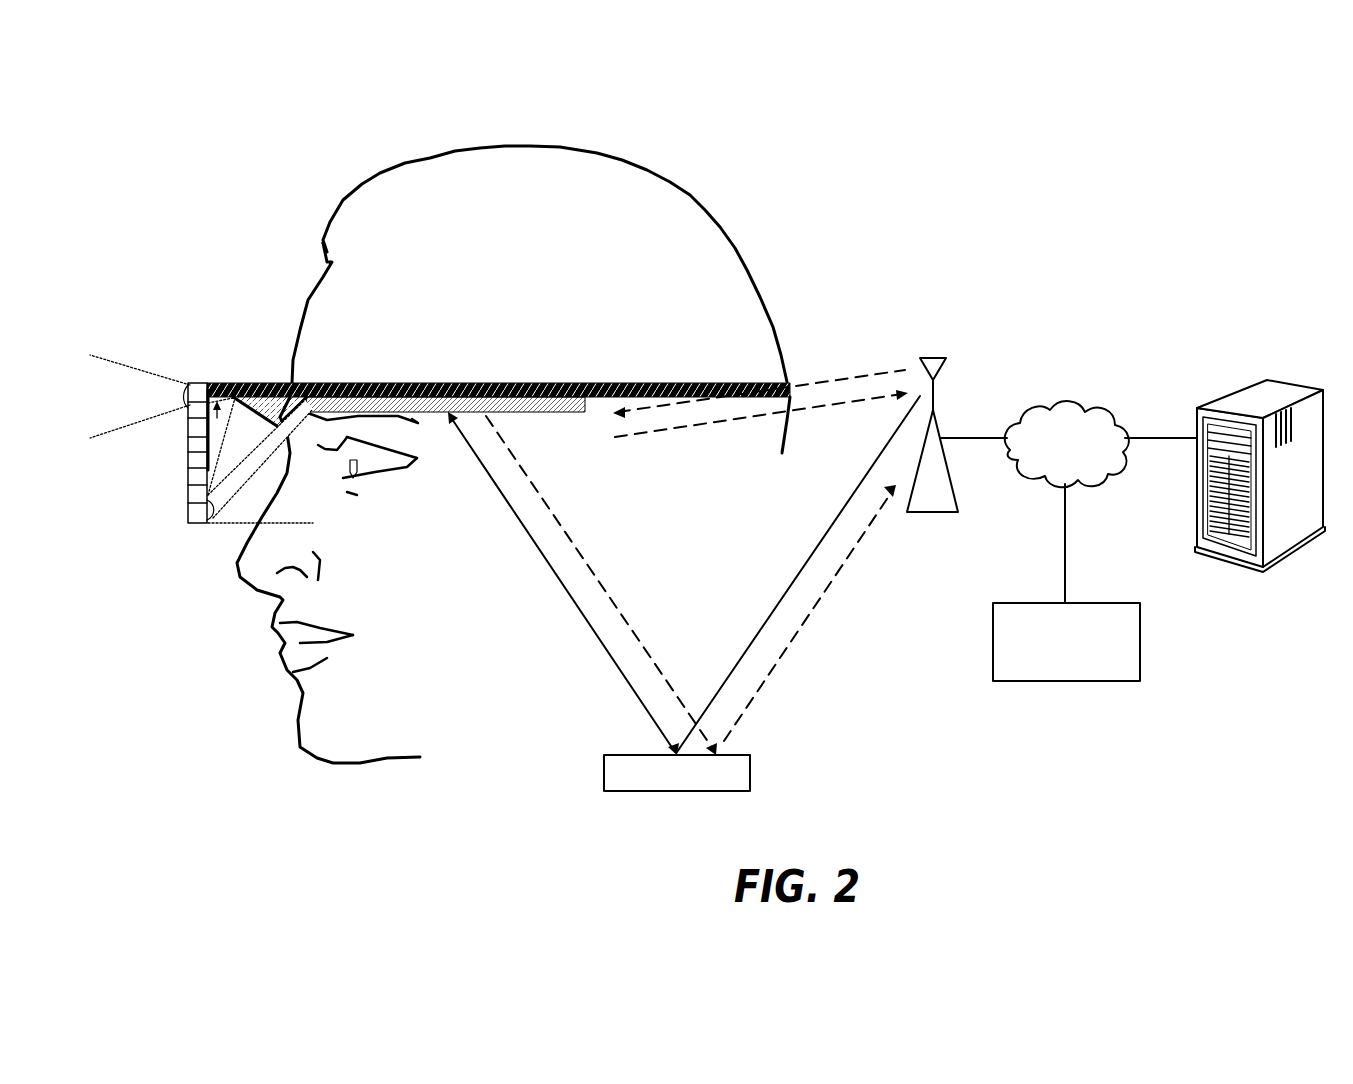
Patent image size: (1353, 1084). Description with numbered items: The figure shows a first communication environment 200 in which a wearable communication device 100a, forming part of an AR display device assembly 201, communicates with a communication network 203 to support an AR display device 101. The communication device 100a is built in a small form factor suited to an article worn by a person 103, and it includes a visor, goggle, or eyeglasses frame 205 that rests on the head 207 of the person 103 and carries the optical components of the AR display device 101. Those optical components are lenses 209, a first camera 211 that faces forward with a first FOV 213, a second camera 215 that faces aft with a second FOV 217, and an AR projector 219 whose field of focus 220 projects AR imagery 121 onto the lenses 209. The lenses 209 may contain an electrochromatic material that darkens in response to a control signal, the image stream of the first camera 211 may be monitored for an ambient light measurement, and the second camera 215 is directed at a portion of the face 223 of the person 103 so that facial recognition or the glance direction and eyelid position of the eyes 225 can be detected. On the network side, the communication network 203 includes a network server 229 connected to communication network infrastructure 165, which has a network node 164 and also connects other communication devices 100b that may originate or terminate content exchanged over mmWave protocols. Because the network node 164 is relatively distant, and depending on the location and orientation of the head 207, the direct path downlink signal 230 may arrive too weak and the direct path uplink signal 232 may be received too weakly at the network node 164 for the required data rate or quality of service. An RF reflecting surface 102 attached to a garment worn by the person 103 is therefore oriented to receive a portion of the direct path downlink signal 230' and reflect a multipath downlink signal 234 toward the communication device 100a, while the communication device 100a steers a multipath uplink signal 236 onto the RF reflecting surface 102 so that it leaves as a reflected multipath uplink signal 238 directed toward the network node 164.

The first communication environment 200 is at (128, 165).
The AR display device assembly 201 is at (218, 293).
The AR display device 101 is at (258, 365).
The communication device 100a is at (525, 407).
The person 103 is at (689, 192).
The head 207 is at (730, 244).
The visor, goggle, or eyeglasses frame 205 is at (712, 380).
The AR imagery 121 is at (200, 452).
The lenses 209 is at (190, 523).
The first camera 211 is at (188, 384).
The first FOV 213 is at (140, 372).
The second camera 215 is at (208, 522).
The second FOV 217 is at (278, 460).
The AR projector 219 is at (233, 395).
The field of focus 220 is at (247, 452).
The face 223 is at (253, 620).
The eyes 225 is at (330, 437).
The direct path downlink signal 230 is at (764, 358).
The direct path uplink signal 232 is at (854, 409).
The portion of direct path downlink signal 230' is at (798, 574).
The multipath downlink signal 234 is at (566, 594).
The multipath uplink signal 236 is at (591, 562).
The reflected multipath uplink signal 238 is at (798, 630).
The network node 164 is at (958, 500).
The communication network infrastructure 165 is at (1101, 502).
The communication network 203 is at (1140, 394).
The network server 229 is at (1195, 522).
The RF reflecting surface 102 is at (677, 773).
The other communication devices 100b is at (1066, 642).